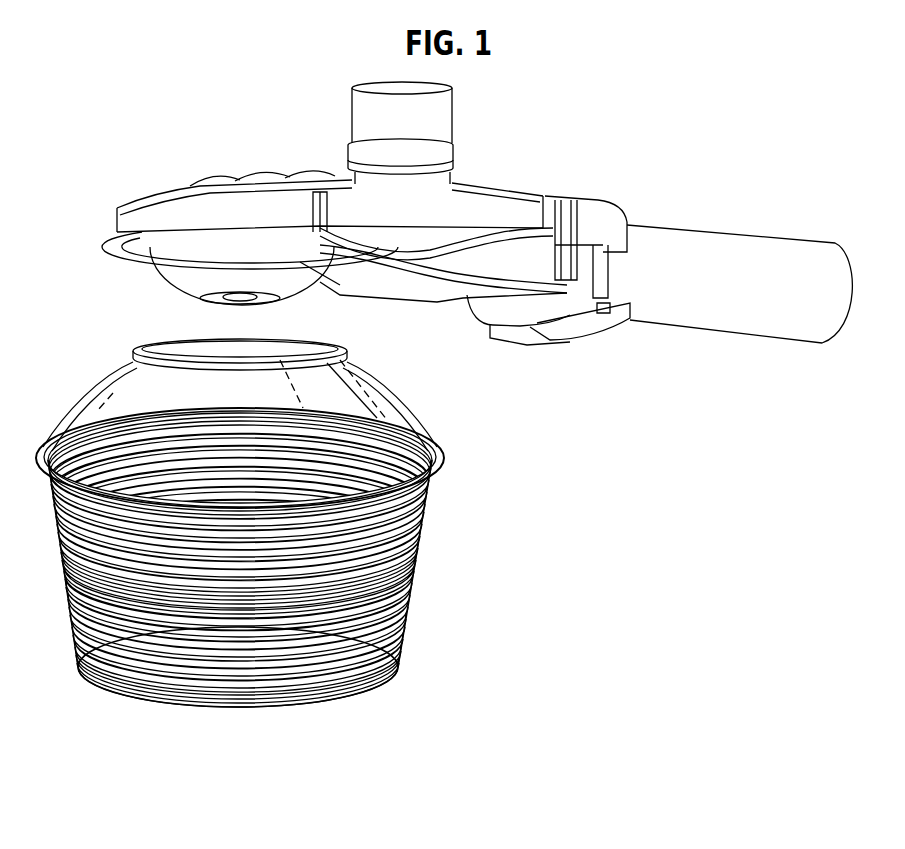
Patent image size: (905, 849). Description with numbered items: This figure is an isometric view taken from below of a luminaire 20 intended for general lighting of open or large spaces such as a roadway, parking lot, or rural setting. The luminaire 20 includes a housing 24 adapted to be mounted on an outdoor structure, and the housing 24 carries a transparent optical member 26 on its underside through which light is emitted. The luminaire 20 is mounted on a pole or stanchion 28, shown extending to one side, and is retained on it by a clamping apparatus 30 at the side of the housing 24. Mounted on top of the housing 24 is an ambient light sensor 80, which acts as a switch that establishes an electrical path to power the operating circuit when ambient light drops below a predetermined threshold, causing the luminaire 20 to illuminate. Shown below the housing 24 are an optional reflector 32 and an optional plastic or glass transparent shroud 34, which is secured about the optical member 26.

The luminaire 20 is at (138, 132).
The housing 24 is at (493, 210).
The transparent optical member 26 is at (177, 277).
The pole or stanchion 28 is at (707, 247).
The clamping apparatus 30 is at (605, 192).
The reflector 32 is at (397, 397).
The transparent shroud 34 is at (422, 517).
The ambient light sensor 80 is at (437, 113).